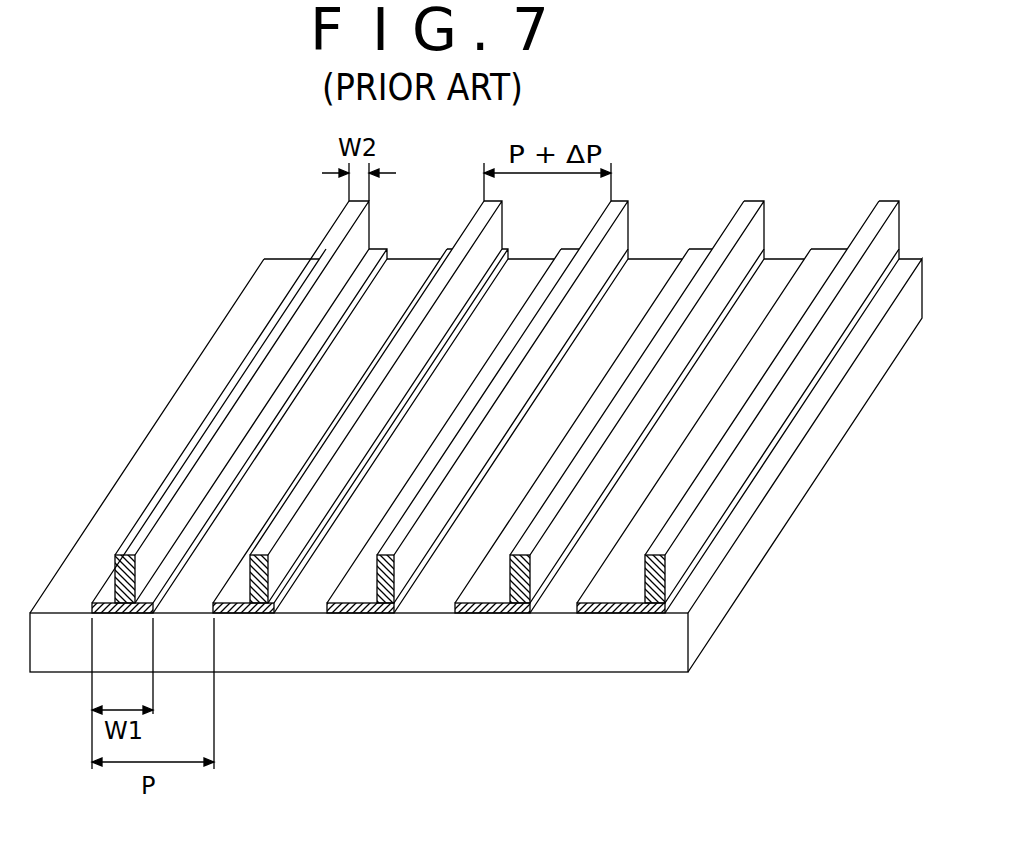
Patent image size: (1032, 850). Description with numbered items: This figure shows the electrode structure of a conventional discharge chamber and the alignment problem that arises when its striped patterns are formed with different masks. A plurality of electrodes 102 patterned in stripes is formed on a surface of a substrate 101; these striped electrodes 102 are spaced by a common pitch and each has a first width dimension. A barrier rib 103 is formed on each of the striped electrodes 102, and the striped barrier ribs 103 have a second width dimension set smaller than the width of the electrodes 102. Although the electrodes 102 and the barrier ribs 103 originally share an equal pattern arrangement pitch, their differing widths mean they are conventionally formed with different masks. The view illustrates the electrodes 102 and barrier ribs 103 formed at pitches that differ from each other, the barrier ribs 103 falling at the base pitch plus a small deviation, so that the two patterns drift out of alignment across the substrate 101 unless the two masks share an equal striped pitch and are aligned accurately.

The substrate 101 is at (620, 645).
The electrodes 102 is at (472, 614).
The barrier rib 103 is at (259, 614).